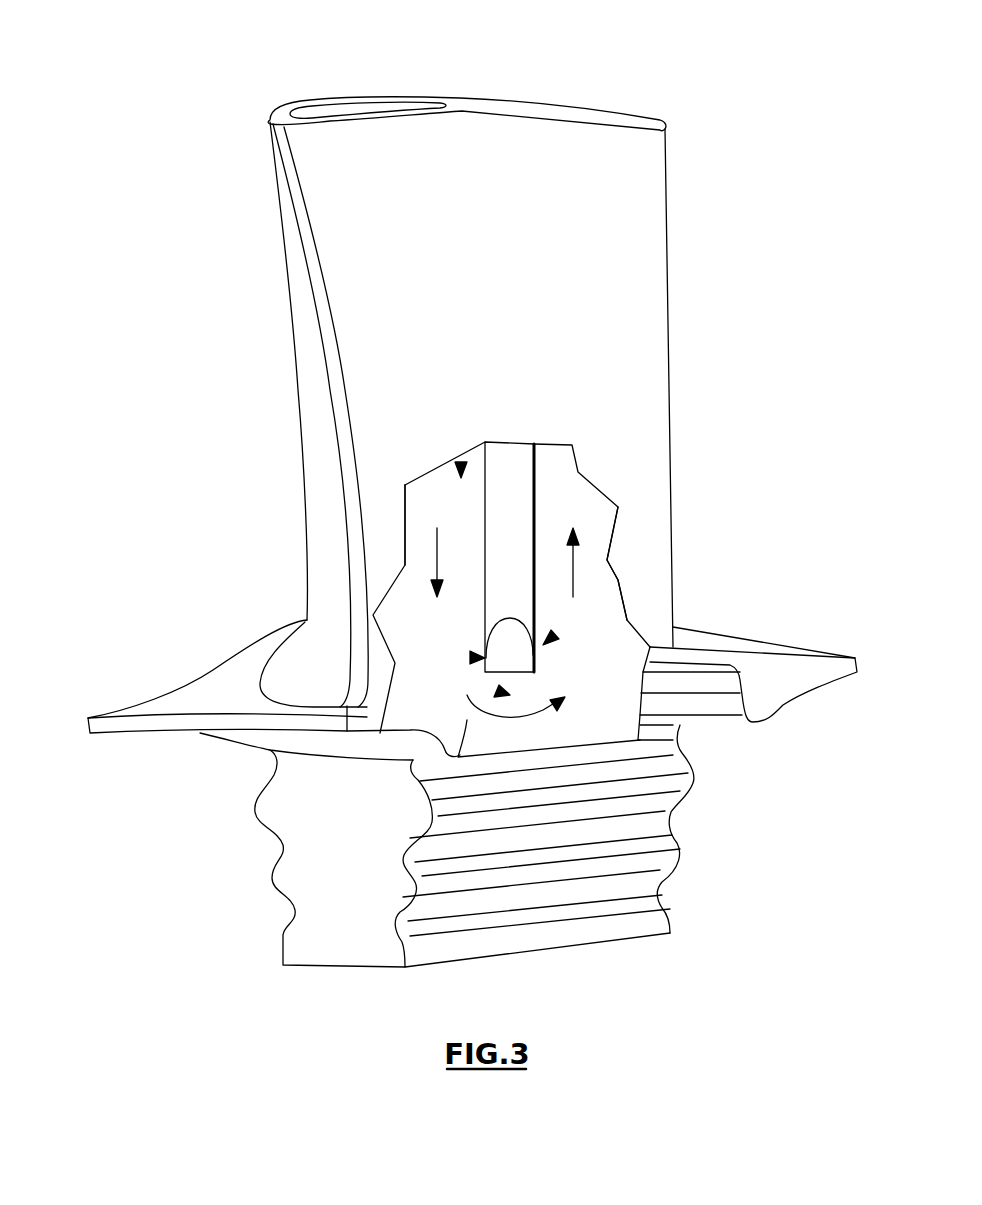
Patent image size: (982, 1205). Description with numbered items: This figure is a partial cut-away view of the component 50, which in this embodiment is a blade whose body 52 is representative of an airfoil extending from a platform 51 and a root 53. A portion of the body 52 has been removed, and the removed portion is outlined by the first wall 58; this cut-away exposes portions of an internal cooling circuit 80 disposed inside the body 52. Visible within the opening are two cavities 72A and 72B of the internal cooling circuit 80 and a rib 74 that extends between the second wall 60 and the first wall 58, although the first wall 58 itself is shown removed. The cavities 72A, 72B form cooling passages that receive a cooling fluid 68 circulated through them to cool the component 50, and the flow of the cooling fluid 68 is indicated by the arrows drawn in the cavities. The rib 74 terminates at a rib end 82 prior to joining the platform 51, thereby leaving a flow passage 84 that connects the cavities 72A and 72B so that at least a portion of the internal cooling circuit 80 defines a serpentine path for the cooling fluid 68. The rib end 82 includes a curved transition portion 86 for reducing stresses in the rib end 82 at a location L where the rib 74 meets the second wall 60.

The component 50 is at (548, 82).
The platform 51 is at (790, 668).
The body 52 is at (463, 344).
The root 53 is at (685, 797).
The first wall 58 is at (654, 463).
The second wall 60 is at (569, 479).
The cooling fluid 68 is at (437, 552).
The cavity 72A is at (443, 497).
The cavity 72B is at (607, 642).
The rib 74 is at (512, 455).
The internal cooling circuit 80 is at (461, 466).
The rib end 82 is at (549, 640).
The flow passage 84 is at (499, 691).
The curved transition portion 86 is at (515, 657).
The location L is at (476, 657).